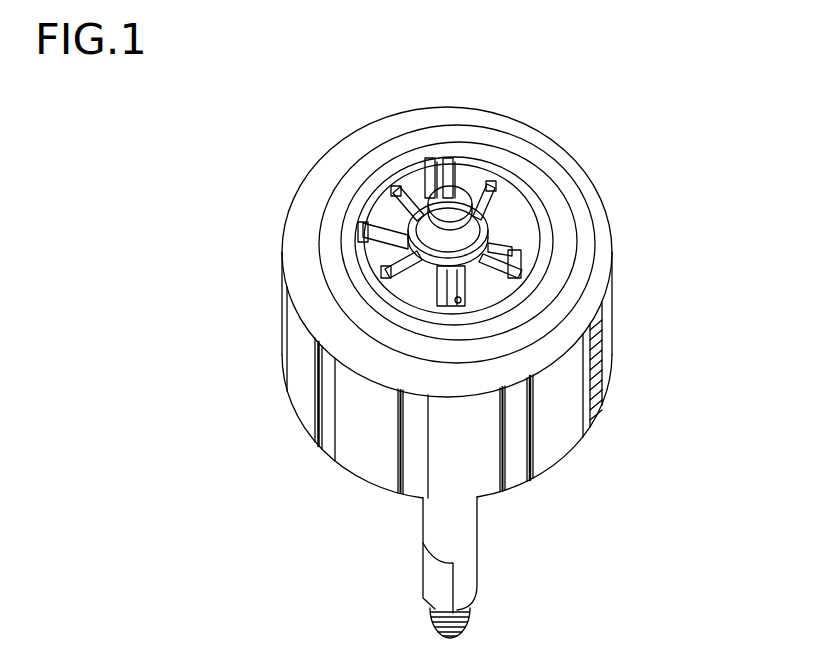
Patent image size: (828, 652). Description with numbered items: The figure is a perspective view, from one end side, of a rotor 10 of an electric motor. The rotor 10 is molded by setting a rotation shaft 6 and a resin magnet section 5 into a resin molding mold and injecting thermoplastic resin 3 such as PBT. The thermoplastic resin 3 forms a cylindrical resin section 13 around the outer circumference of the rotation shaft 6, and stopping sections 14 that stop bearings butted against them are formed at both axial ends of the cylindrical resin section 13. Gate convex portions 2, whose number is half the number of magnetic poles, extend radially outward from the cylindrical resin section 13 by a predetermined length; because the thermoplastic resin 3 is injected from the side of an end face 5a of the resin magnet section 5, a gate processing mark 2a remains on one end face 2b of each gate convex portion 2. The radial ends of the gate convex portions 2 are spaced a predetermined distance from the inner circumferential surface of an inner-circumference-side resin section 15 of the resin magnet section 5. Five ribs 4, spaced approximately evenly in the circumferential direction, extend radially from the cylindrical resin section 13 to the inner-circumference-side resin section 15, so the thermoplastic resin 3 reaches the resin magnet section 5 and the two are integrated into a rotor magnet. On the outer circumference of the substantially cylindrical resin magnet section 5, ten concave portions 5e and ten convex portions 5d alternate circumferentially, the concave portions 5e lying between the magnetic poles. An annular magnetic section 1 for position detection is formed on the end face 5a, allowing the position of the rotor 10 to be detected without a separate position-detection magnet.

The rotor 10 is at (602, 68).
The magnetic section 1 is at (552, 188).
The gate convex portion 2 is at (508, 272).
The gate processing mark 2a is at (388, 265).
The end face 2b is at (513, 249).
The thermoplastic resin 3 is at (367, 186).
The rib 4 is at (383, 243).
The resin magnet section 5 is at (577, 160).
The end face 5a is at (549, 147).
The convex portion 5d is at (562, 432).
The concave portion 5e is at (513, 458).
The rotation shaft 6 is at (456, 197).
The cylindrical resin section 13 is at (500, 229).
The stopping section 14 is at (418, 213).
The inner-circumference-side resin section 15 is at (538, 265).